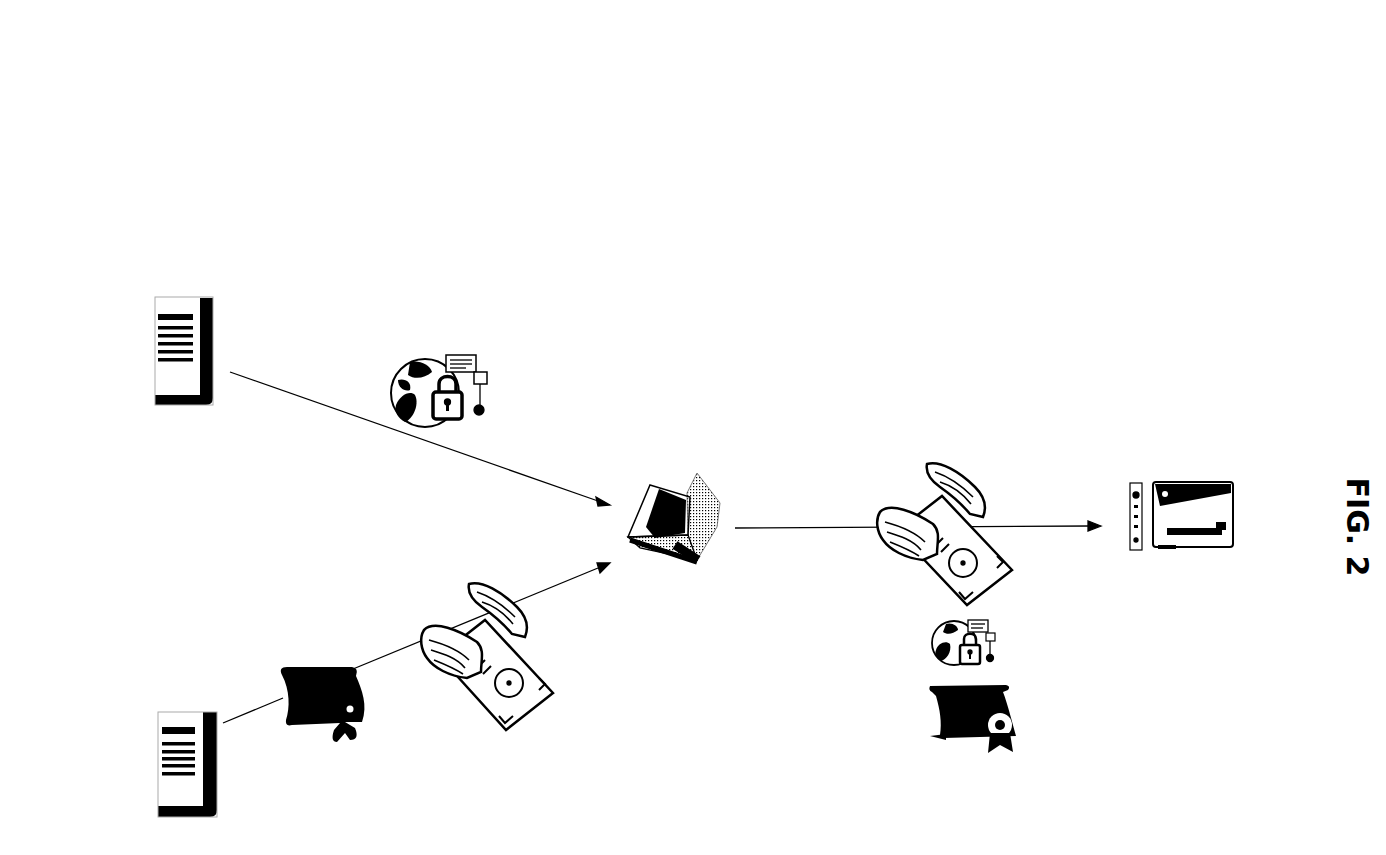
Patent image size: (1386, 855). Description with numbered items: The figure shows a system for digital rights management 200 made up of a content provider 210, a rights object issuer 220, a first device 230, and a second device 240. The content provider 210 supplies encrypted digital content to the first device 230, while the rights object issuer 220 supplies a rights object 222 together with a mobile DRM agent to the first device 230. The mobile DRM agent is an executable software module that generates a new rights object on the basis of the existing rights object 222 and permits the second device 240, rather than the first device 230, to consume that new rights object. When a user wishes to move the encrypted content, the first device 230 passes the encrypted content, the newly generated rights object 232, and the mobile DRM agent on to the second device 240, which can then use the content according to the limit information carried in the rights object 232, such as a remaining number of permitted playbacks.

The system for digital rights management 200 is at (410, 107).
The content provider 210 is at (182, 295).
The rights object issuer 220 is at (173, 712).
The rights object 222 is at (325, 745).
The first device 230 is at (682, 490).
The rights object 232 is at (1020, 718).
The second device 240 is at (1175, 477).